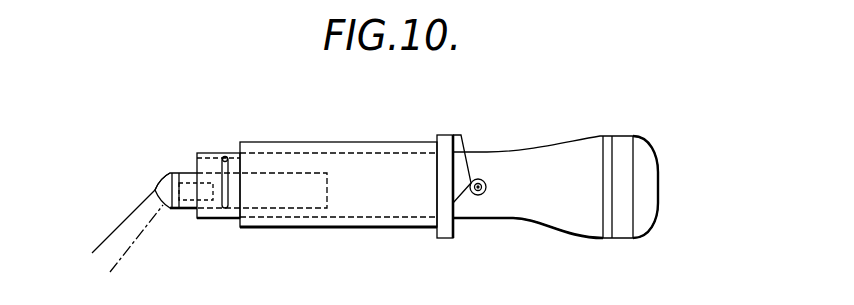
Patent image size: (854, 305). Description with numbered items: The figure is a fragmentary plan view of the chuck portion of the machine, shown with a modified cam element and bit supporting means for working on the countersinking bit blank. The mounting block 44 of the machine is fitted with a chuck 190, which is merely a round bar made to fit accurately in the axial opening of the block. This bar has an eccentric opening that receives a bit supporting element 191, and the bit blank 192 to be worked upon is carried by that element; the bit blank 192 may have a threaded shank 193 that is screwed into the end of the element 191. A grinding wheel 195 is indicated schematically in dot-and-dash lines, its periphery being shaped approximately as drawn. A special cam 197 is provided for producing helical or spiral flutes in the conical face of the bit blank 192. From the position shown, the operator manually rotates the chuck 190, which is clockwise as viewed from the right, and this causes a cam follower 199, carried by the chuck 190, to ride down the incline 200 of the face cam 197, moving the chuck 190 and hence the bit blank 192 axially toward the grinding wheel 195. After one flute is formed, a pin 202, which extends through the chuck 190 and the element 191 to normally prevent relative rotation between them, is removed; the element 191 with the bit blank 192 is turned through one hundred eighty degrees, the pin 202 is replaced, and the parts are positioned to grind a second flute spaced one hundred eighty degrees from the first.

The mounting block 44 is at (323, 147).
The chuck 190 is at (208, 155).
The bit supporting element 191 is at (188, 173).
The bit blank 192 is at (163, 187).
The threaded shank 193 is at (157, 190).
The grinding wheel 195 is at (120, 220).
The cam 197 is at (450, 135).
The cam follower 199 is at (481, 180).
The incline 200 is at (464, 160).
The pin 202 is at (226, 158).